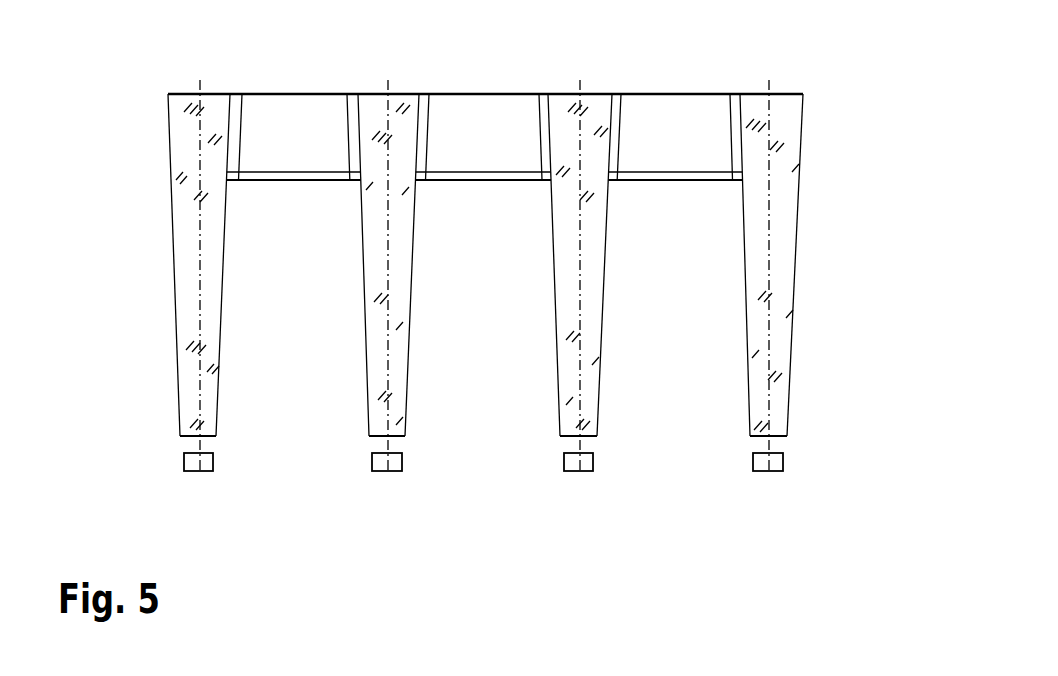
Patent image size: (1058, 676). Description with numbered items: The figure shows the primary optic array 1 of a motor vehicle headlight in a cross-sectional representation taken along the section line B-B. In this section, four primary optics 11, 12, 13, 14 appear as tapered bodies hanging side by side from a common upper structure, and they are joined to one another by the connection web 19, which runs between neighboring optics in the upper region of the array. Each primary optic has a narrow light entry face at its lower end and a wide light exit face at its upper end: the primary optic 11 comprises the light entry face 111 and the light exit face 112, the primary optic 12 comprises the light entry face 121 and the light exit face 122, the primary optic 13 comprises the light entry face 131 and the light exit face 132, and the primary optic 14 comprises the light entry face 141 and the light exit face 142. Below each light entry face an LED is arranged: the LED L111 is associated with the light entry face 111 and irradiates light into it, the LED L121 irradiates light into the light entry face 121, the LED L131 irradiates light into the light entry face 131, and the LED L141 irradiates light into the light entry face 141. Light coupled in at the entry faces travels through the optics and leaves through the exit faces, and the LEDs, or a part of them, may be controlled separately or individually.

The primary optic array 1 is at (829, 111).
The connection web 19 is at (293, 155).
The primary optic 11 is at (190, 313).
The primary optic 12 is at (377, 313).
The primary optic 13 is at (568, 313).
The primary optic 14 is at (760, 313).
The light entry face 111 is at (187, 440).
The light entry face 121 is at (378, 441).
The light entry face 131 is at (568, 441).
The light entry face 141 is at (757, 441).
The light exit face 112 is at (218, 94).
The light exit face 122 is at (367, 94).
The light exit face 132 is at (560, 94).
The light exit face 142 is at (750, 94).
The LED L111 is at (203, 471).
The LED L121 is at (391, 471).
The LED L131 is at (582, 471).
The LED L141 is at (771, 471).